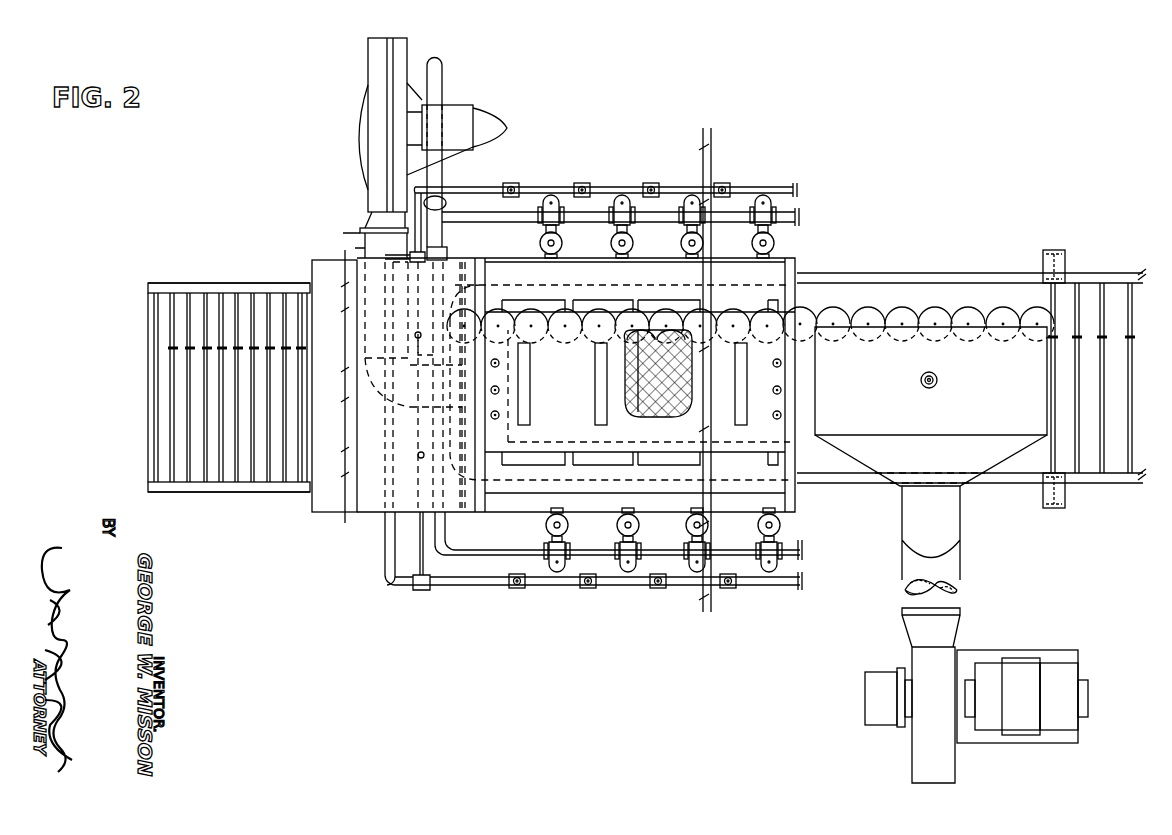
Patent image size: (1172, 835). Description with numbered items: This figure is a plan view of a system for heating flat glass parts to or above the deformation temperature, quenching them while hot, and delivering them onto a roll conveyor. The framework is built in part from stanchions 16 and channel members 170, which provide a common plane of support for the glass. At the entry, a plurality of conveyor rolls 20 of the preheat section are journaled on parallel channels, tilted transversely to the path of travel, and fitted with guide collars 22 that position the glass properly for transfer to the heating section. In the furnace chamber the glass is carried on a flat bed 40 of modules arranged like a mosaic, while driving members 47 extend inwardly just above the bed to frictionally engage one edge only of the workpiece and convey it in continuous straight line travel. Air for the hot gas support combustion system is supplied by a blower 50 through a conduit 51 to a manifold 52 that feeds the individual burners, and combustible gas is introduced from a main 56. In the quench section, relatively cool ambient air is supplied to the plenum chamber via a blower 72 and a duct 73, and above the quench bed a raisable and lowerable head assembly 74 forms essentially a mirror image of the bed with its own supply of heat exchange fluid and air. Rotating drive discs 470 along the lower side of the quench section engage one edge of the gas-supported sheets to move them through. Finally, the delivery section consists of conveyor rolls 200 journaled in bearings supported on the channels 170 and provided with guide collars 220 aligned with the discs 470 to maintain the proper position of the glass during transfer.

The stanchions 16 is at (218, 284).
The conveyor rolls 20 is at (200, 385).
The guide collars 22 is at (178, 348).
The flat bed 40 is at (648, 417).
The driving members 47 is at (540, 343).
The blower 50 is at (368, 62).
The conduit 51 is at (360, 231).
The manifold 52 is at (577, 442).
The main 56 is at (798, 545).
The blower 72 is at (912, 752).
The duct 73 is at (905, 590).
The head assembly 74 is at (931, 406).
The channel members 170 is at (1120, 278).
The conveyor rolls 200 is at (1108, 398).
The guide collars 220 is at (1118, 338).
The drive discs 470 is at (958, 310).